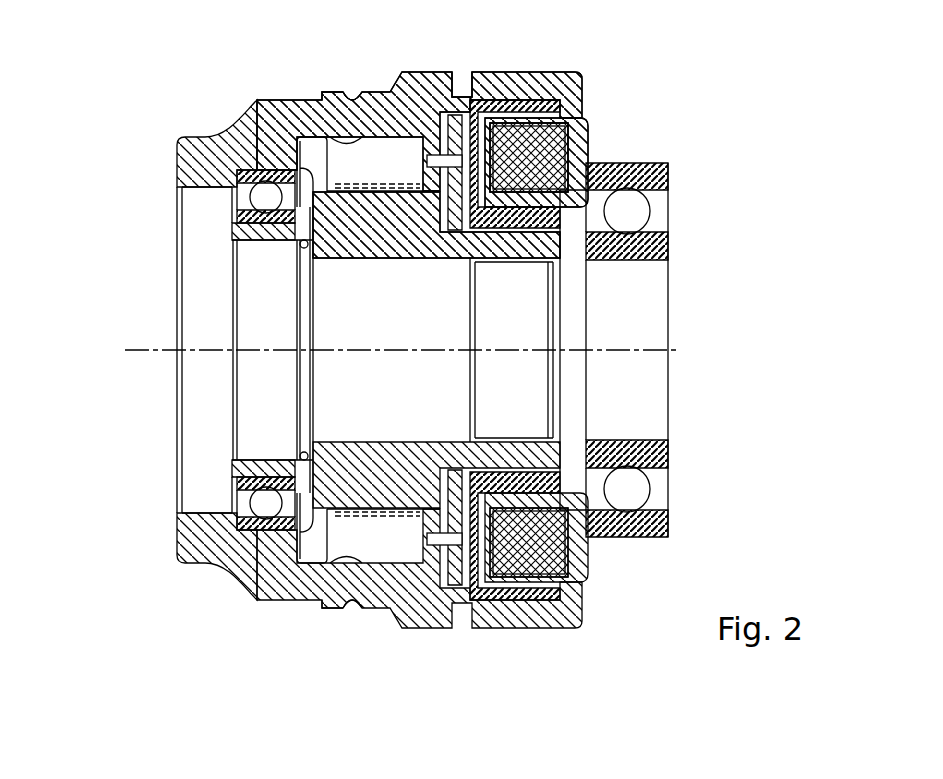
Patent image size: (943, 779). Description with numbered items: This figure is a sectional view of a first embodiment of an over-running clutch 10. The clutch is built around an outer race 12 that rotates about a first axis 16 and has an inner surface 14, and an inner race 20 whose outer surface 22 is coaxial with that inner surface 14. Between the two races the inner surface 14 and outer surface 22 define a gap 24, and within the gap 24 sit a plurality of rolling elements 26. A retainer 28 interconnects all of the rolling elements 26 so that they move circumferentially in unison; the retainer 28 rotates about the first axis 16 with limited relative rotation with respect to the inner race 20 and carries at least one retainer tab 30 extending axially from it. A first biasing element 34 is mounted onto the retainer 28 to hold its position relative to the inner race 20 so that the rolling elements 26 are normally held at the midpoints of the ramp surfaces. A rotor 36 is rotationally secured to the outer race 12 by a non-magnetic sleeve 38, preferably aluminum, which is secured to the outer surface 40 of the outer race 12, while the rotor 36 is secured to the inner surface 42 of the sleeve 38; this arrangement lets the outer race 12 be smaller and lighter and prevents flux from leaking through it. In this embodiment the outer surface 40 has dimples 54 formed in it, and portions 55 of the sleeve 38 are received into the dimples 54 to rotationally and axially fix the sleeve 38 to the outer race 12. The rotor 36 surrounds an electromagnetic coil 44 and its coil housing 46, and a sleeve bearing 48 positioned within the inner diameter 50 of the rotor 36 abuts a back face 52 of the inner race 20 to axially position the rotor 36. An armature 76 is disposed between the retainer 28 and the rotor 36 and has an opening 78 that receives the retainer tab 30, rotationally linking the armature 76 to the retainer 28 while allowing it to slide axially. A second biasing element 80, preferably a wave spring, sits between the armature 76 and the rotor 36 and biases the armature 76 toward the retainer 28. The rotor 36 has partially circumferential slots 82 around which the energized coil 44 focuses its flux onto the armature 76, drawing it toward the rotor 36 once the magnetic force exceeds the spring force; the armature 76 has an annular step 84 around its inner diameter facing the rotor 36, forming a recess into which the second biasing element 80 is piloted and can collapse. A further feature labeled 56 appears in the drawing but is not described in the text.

The over-running clutch 10 is at (199, 598).
The outer race 12 is at (233, 133).
The inner surface 14 is at (300, 152).
The first axis 16 is at (150, 352).
The inner race 20 is at (315, 258).
The outer surface 22 is at (404, 194).
The gap 24 is at (299, 158).
The rolling elements 26 is at (396, 157).
The retainer 28 is at (297, 161).
The retainer tab 30 is at (433, 128).
The first biasing element 34 is at (300, 245).
The rotor 36 is at (583, 100).
The non-magnetic sleeve 38 is at (546, 80).
The outer surface 40 is at (314, 90).
The inner surface 42 is at (479, 104).
The electromagnetic coil 44 is at (562, 175).
The coil housing 46 is at (590, 135).
The sleeve bearing 48 is at (548, 252).
The inner diameter 50 is at (558, 442).
The back face 52 is at (472, 482).
The dimples 54 is at (348, 92).
The portions 55 is at (353, 98).
The shoulder 56 is at (352, 610).
The armature 76 is at (669, 171).
The opening 78 is at (442, 545).
The second biasing element 80 is at (562, 522).
The slots 82 is at (474, 562).
The annular step 84 is at (438, 482).